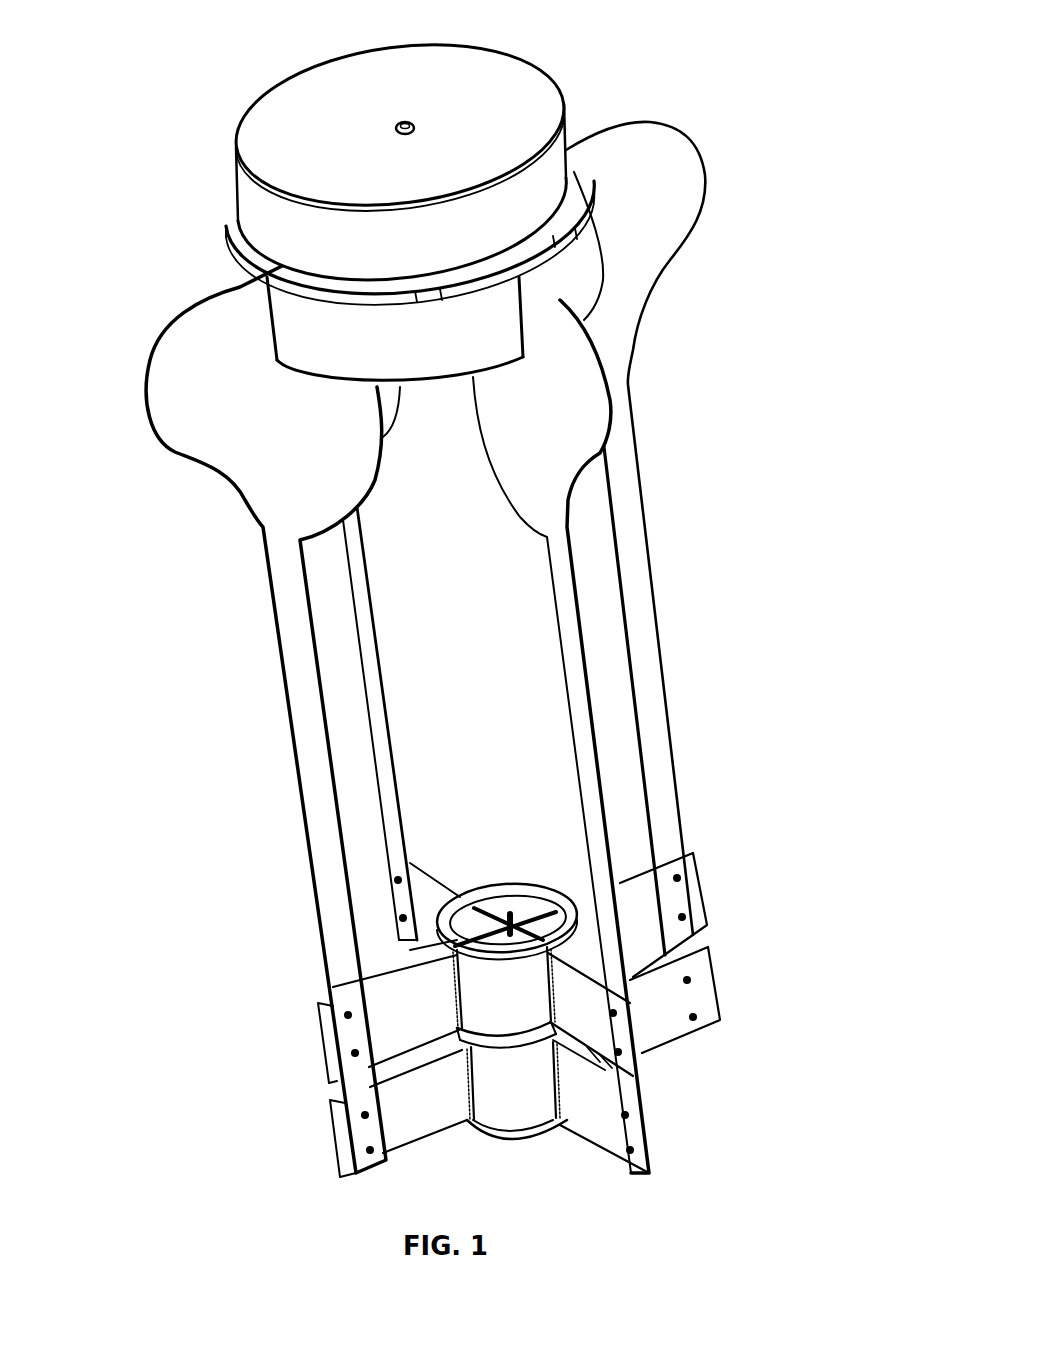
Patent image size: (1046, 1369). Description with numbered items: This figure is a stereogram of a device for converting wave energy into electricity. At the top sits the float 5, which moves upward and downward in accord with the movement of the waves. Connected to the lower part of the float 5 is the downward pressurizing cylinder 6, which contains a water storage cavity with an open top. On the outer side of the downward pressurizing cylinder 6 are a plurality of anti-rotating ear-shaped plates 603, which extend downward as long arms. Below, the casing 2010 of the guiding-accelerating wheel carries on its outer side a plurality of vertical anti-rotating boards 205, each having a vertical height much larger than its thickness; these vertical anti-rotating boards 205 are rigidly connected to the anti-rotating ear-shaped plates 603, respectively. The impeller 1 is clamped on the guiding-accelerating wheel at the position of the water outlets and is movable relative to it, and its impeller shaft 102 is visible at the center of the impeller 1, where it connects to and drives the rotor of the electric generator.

The float 5 is at (500, 130).
The anti-rotating ear-shaped plate 603 is at (657, 163).
The downward pressurizing cylinder 6 is at (370, 353).
The impeller shaft 102 is at (510, 912).
The casing 2010 is at (500, 977).
The vertical anti-rotating board 205 is at (403, 1005).
The impeller 1 is at (523, 1038).